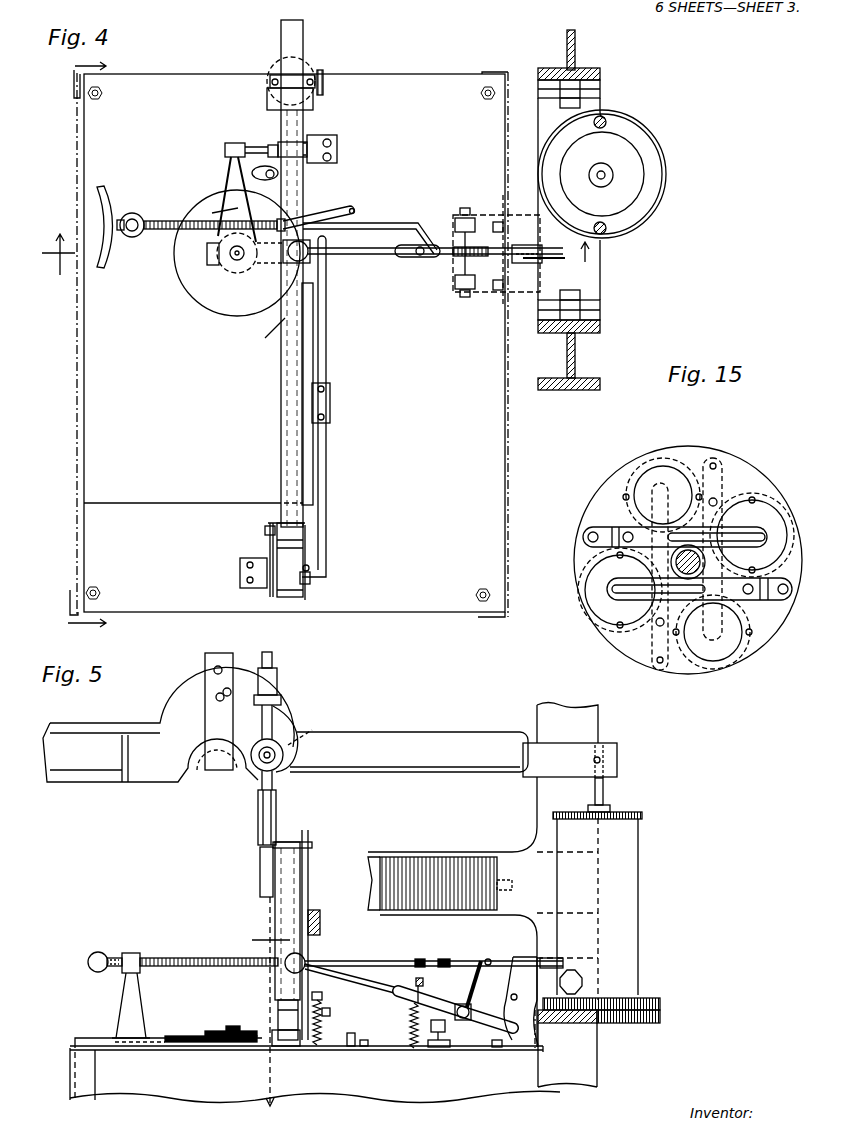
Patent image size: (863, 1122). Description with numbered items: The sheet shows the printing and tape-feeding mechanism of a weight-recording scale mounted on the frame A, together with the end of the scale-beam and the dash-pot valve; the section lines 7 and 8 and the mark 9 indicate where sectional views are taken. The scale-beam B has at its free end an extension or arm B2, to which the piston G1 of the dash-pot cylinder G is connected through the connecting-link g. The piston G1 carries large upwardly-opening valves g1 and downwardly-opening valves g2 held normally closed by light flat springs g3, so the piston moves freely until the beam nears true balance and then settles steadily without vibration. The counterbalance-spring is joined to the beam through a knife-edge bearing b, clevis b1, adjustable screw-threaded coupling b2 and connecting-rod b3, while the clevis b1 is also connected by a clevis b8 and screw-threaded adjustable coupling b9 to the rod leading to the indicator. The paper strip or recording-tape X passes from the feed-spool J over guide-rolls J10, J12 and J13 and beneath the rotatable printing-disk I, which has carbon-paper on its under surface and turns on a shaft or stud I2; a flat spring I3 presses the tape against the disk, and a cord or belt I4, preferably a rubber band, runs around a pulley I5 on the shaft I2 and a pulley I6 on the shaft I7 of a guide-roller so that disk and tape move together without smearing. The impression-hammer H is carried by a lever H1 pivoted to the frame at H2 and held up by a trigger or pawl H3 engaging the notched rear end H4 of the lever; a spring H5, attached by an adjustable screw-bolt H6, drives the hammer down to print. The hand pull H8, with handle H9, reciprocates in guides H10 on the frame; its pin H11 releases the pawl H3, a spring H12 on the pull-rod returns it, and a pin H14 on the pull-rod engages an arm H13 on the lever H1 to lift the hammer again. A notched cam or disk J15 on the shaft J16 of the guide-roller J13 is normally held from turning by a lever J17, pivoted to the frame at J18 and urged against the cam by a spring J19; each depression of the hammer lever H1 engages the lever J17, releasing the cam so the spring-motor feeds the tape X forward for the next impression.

In FIG. 4, the frame A is at (594, 70).
In FIG. 5, the frame A is at (545, 808).
In FIG. 4, the section line 7 is at (87, 347).
In FIG. 4, the section line 8 is at (319, 254).
In FIG. 4, the section line 9 is at (606, 174).
In FIG. 4, the dash-pot cylinder G is at (627, 197).
In FIG. 5, the dash-pot cylinder G is at (636, 869).
In FIG. 15, the dash-pot piston G1 is at (654, 450).
In FIG. 15, the connecting-link g is at (698, 552).
In FIG. 5, the connecting-link g is at (606, 796).
In FIG. 15, the upwardly-opening valves g1 is at (778, 552).
In FIG. 15, the downwardly-opening valves g2 is at (641, 490).
In FIG. 15, the flat springs g3 is at (667, 480).
In FIG. 4, the feed reel J is at (303, 40).
In FIG. 5, the feed reel J is at (304, 860).
In FIG. 4, the guide-roll J10 is at (308, 142).
In FIG. 4, the guide-roll J12 is at (304, 545).
In FIG. 4, the guide-roller J13 is at (272, 598).
In FIG. 5, the guide-roller J13 is at (292, 1040).
In FIG. 4, the notched cam J15 is at (307, 600).
In FIG. 5, the notched cam J15 is at (316, 1047).
In FIG. 4, the shaft J16 is at (309, 568).
In FIG. 4, the lever J17 is at (327, 322).
In FIG. 5, the lever J17 is at (407, 935).
In FIG. 4, the pivot J18 is at (331, 403).
In FIG. 5, the pivot J18 is at (314, 922).
In FIG. 4, the spring J19 is at (311, 582).
In FIG. 5, the spring J19 is at (332, 1012).
In FIG. 4, the printing-disk I is at (205, 305).
In FIG. 5, the printing-disk I is at (195, 1038).
In FIG. 4, the shaft or stud I2 is at (237, 262).
In FIG. 5, the shaft or stud I2 is at (233, 1026).
In FIG. 4, the flat spring I3 is at (330, 212).
In FIG. 5, the flat spring I3 is at (352, 1048).
In FIG. 4, the cord or belt I4 is at (218, 207).
In FIG. 5, the cord or belt I4 is at (210, 1044).
In FIG. 4, the pulley I5 is at (215, 263).
In FIG. 5, the pulley I5 is at (232, 1030).
In FIG. 4, the pulley I6 is at (225, 152).
In FIG. 4, the shaft I7 is at (243, 146).
In FIG. 4, the impression-hammer H is at (306, 258).
In FIG. 5, the impression-hammer H is at (305, 966).
In FIG. 4, the impression-hammer lever H1 is at (418, 258).
In FIG. 5, the impression-hammer lever H1 is at (358, 982).
In FIG. 4, the pivot H2 is at (452, 245).
In FIG. 4, the trigger or pawl H3 is at (510, 240).
In FIG. 5, the trigger or pawl H3 is at (540, 860).
In FIG. 5, the notched rear end H4 is at (518, 1047).
In FIG. 5, the spring H5 is at (410, 1012).
In FIG. 4, the adjustable screw-bolt H6 is at (397, 222).
In FIG. 5, the adjustable screw-bolt H6 is at (425, 958).
In FIG. 4, the hand slide or pull H8 is at (168, 221).
In FIG. 5, the hand slide or pull H8 is at (178, 968).
In FIG. 4, the handle H9 is at (97, 190).
In FIG. 5, the handle H9 is at (96, 950).
In FIG. 4, the guides H10 is at (547, 262).
In FIG. 4, the pin or projection H11 is at (530, 264).
In FIG. 5, the pin or projection H11 is at (553, 1024).
In FIG. 4, the spring H12 is at (137, 215).
In FIG. 5, the spring H12 is at (150, 952).
In FIG. 4, the arm H13 is at (466, 262).
In FIG. 5, the arm H13 is at (490, 960).
In FIG. 4, the pin or projection H14 is at (478, 240).
In FIG. 5, the pin or projection H14 is at (475, 966).
In FIG. 4, the paper strip or recording-tape X is at (262, 337).
In FIG. 5, the paper strip or recording-tape X is at (260, 942).
In FIG. 5, the scale-beam B is at (150, 742).
In FIG. 5, the extension or arm B2 is at (447, 735).
In FIG. 5, the knife-edge bearing b is at (312, 735).
In FIG. 5, the clevis b1 is at (277, 793).
In FIG. 5, the adjustable screw-threaded coupling b2 is at (260, 856).
In FIG. 4, the connecting-rod b3 is at (268, 170).
In FIG. 5, the connecting-rod b3 is at (268, 900).
In FIG. 5, the clevis b8 is at (272, 735).
In FIG. 5, the screw-threaded adjustable coupling b9 is at (277, 680).